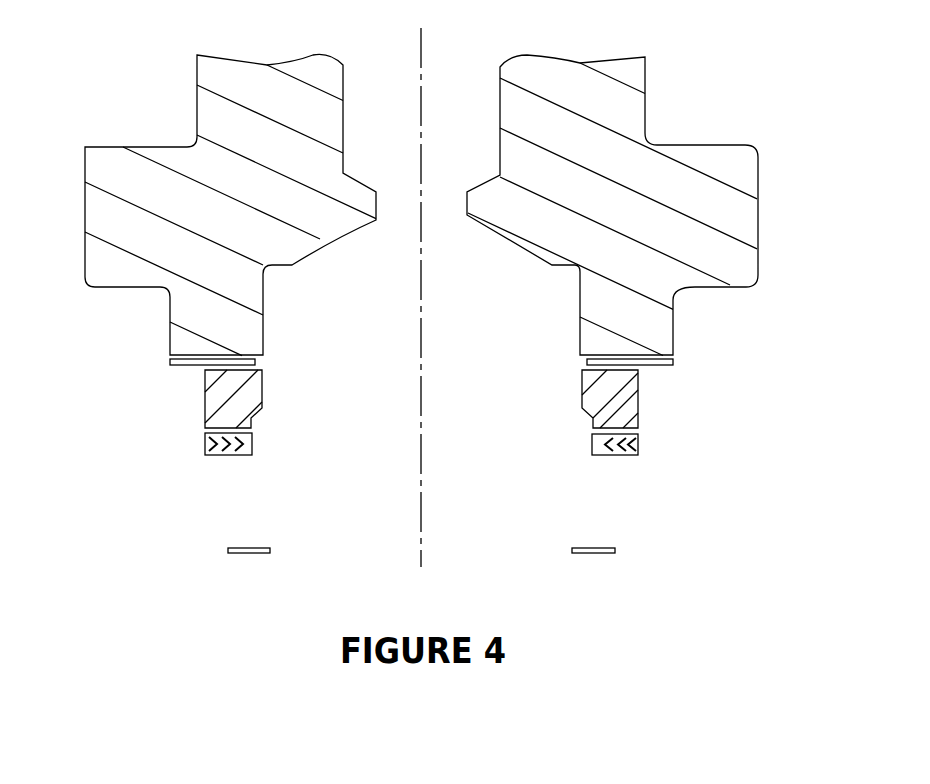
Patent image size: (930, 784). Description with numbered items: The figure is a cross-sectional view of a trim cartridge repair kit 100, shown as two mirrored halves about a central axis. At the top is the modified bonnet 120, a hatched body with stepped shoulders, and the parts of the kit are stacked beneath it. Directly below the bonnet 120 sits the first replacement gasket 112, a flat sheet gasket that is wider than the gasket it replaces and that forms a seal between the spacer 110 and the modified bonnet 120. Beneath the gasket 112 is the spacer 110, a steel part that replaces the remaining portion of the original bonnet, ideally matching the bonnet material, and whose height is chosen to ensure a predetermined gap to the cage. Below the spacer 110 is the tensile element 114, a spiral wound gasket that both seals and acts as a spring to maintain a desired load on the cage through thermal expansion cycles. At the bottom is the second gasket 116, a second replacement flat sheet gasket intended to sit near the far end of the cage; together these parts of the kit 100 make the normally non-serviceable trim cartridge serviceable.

The trim cartridge repair kit 100 is at (726, 73).
The spacer 110 is at (215, 402).
The first replacement gasket 112 is at (170, 361).
The tensile element 114 is at (207, 441).
The second gasket 116 is at (228, 550).
The modified bonnet 120 is at (102, 173).